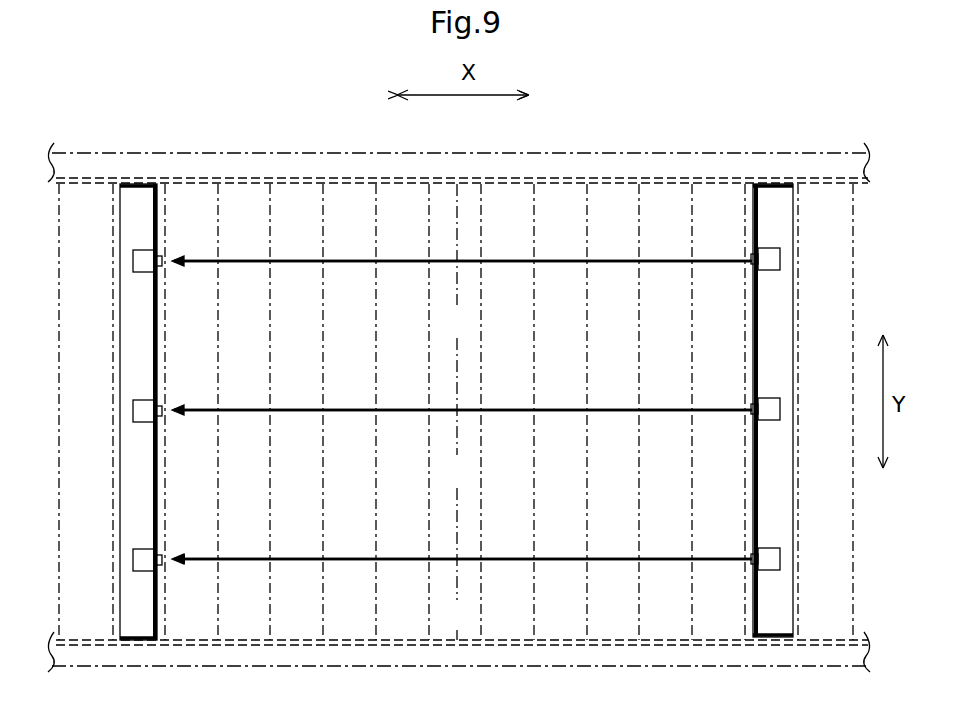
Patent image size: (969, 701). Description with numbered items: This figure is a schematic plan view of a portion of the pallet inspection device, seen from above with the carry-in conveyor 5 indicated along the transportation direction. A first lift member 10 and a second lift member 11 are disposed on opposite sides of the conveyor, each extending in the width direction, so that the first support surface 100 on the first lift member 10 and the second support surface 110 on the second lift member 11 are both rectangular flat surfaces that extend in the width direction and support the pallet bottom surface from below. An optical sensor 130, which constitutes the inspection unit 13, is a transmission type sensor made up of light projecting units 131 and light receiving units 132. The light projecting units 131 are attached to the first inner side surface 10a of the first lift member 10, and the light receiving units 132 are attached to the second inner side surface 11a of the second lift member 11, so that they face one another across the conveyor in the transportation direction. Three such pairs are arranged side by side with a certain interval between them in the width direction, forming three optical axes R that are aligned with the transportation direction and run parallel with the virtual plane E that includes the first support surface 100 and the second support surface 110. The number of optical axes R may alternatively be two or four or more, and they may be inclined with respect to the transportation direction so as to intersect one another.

The carry-in conveyor 5 is at (600, 135).
The first lift member 10 is at (741, 364).
The first inner side surface 10a is at (757, 505).
The second lift member 11 is at (174, 366).
The second inner side surface 11a is at (160, 510).
The inspection unit 13 is at (456, 436).
The optical sensor 130 is at (456, 436).
The light projecting unit 131 is at (768, 263).
The light receiving unit 132 is at (147, 265).
The first support surface 100 is at (772, 362).
The second support surface 110 is at (143, 365).
The virtual plane E is at (250, 180).
The optical axes R is at (455, 412).